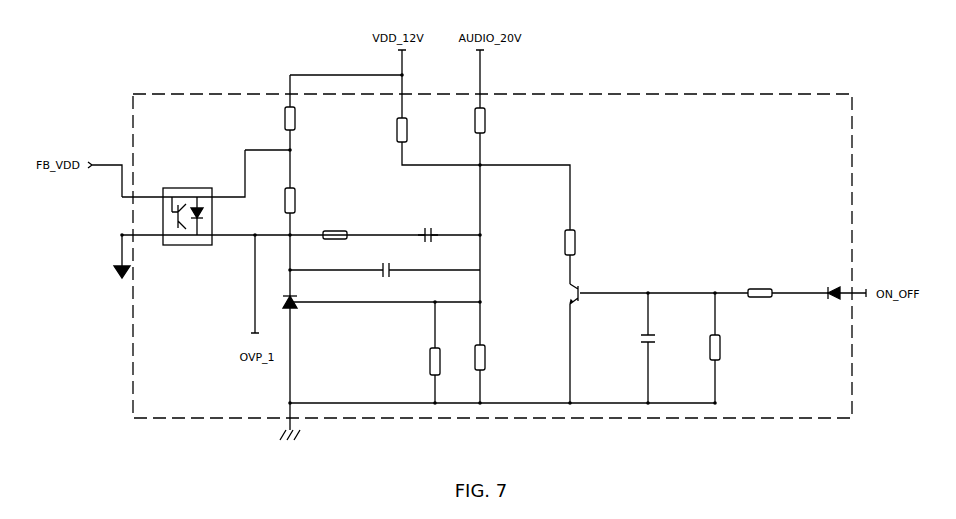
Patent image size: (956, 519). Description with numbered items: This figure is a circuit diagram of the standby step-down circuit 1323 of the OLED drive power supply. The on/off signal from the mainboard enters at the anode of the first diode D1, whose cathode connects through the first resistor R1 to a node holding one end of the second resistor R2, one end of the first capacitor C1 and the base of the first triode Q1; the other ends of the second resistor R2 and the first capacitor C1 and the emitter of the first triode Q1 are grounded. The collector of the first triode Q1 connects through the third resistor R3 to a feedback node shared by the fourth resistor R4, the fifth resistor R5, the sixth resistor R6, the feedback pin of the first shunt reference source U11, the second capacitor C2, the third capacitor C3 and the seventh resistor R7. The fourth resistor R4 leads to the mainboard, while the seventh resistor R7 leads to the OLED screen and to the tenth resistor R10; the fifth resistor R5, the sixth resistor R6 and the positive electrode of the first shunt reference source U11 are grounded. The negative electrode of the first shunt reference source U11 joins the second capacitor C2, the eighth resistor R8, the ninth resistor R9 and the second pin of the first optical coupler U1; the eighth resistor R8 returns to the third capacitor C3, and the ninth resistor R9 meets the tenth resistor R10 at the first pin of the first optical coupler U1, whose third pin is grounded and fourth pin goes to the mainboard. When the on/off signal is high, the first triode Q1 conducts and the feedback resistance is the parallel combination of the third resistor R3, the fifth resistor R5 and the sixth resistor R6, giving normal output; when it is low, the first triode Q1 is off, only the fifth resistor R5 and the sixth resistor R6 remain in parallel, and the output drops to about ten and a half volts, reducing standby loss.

The standby step-down circuit 1323 is at (852, 186).
The first optical coupler U1 is at (187, 207).
The first shunt reference source U11 is at (301, 313).
The tenth resistor R10 is at (303, 118).
The ninth resistor R9 is at (299, 200).
The eighth resistor R8 is at (335, 227).
The seventh resistor R7 is at (411, 130).
The sixth resistor R6 is at (425, 361).
The fifth resistor R5 is at (491, 357).
The fourth resistor R4 is at (491, 120).
The third resistor R3 is at (579, 242).
The second resistor R2 is at (725, 347).
The first resistor R1 is at (760, 282).
The first capacitor C1 is at (658, 344).
The second capacitor C2 is at (379, 279).
The third capacitor C3 is at (425, 229).
The first triode Q1 is at (563, 294).
The first diode D1 is at (834, 280).